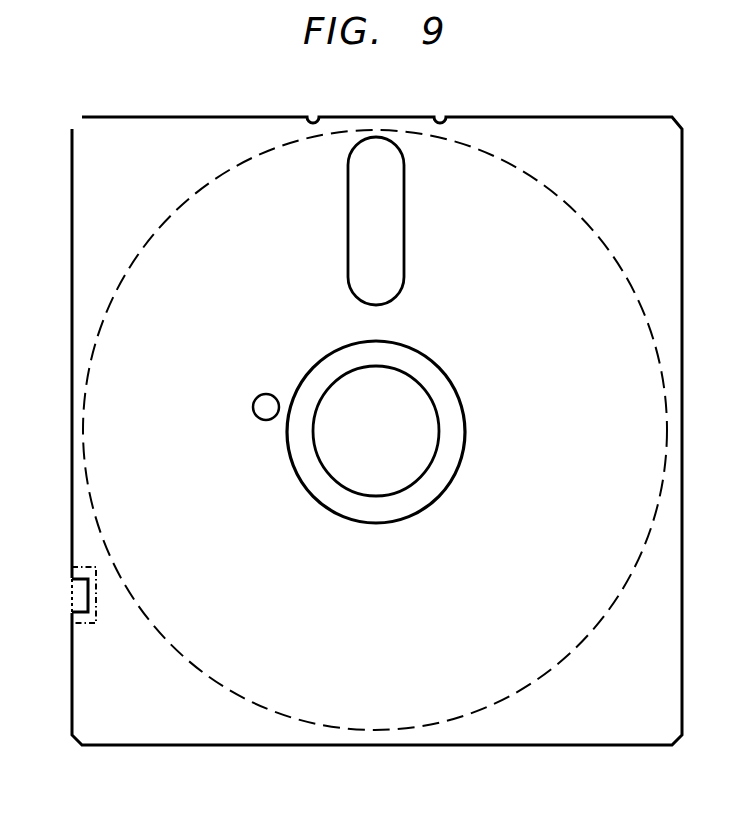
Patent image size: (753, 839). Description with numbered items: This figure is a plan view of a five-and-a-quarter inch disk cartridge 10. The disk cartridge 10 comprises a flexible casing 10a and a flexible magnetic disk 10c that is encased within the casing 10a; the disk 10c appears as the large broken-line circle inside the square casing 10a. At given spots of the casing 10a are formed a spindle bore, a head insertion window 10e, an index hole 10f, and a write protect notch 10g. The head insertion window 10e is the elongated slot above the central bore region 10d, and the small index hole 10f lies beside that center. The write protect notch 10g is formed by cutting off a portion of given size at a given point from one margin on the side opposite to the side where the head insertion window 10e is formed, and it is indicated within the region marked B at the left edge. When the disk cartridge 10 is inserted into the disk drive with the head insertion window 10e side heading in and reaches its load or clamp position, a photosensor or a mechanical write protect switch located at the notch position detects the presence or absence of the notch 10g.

The disk cartridge 10 is at (532, 117).
The flexible casing 10a is at (623, 126).
The flexible magnetic disk 10c is at (200, 191).
The center hub hole 10d is at (466, 412).
The head insertion window 10e is at (403, 200).
The index hole 10f is at (253, 407).
The write protect notch 10g is at (77, 599).
The notch region B is at (90, 625).